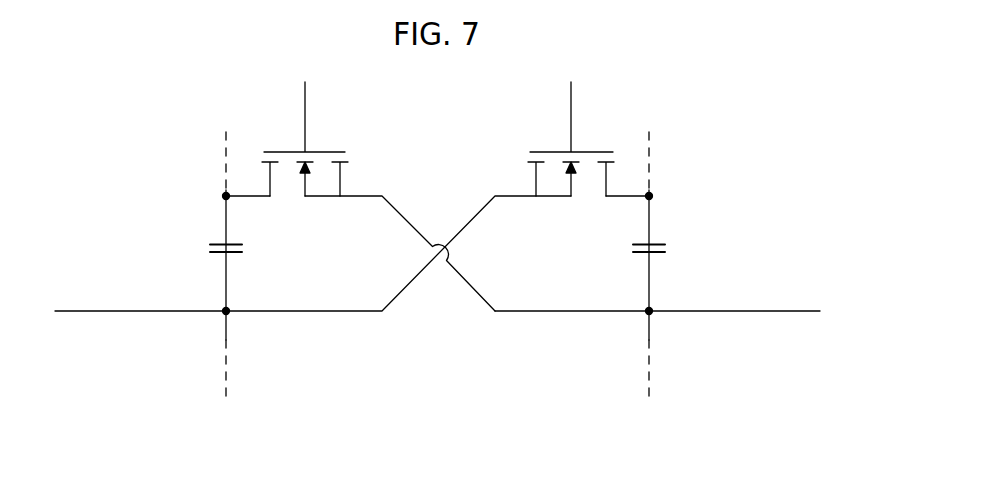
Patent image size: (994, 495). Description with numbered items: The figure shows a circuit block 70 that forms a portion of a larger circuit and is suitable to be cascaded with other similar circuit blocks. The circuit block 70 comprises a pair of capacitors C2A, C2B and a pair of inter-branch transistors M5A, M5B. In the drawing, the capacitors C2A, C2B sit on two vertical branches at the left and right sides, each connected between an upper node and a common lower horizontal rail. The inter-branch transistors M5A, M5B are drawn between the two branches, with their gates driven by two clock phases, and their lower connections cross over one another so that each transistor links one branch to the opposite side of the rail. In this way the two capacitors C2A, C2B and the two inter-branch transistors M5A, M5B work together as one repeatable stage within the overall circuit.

The circuit block 70 is at (727, 153).
The inter-branch transistor M5A is at (283, 187).
The inter-branch transistor M5B is at (582, 190).
The capacitor C2A is at (212, 244).
The capacitor C2B is at (655, 244).